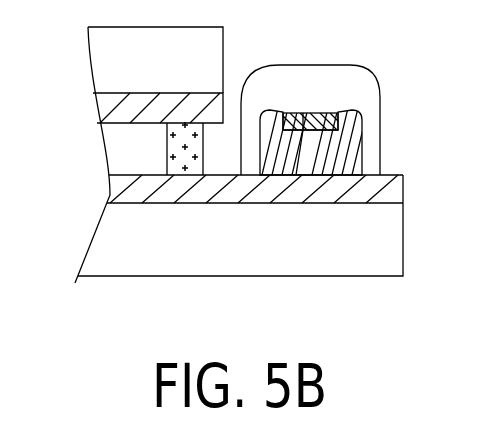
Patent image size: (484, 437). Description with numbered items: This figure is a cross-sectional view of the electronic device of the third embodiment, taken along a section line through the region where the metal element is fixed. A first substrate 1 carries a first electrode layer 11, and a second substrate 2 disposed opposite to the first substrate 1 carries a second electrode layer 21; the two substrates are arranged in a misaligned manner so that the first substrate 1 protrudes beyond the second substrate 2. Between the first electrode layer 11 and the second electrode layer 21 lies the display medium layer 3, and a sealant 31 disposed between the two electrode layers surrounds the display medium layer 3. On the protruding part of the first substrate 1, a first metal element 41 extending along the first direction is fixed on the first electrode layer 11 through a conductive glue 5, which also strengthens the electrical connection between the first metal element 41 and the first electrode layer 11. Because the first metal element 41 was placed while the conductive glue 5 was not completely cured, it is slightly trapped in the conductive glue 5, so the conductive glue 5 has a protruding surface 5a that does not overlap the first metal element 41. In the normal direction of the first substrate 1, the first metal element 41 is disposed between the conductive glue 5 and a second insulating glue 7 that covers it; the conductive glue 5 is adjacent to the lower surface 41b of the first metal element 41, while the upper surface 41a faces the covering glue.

The first substrate 1 is at (117, 255).
The first electrode layer 11 is at (125, 192).
The second substrate 2 is at (100, 67).
The second electrode layer 21 is at (110, 110).
The display medium layer 3 is at (117, 137).
The sealant 31 is at (175, 157).
The first metal element 41 is at (303, 113).
The upper surface 41a is at (318, 115).
The lower surface 41b is at (296, 175).
The conductive glue 5 is at (357, 152).
The protruding surface 5a is at (345, 110).
The second insulating glue 7 is at (363, 78).